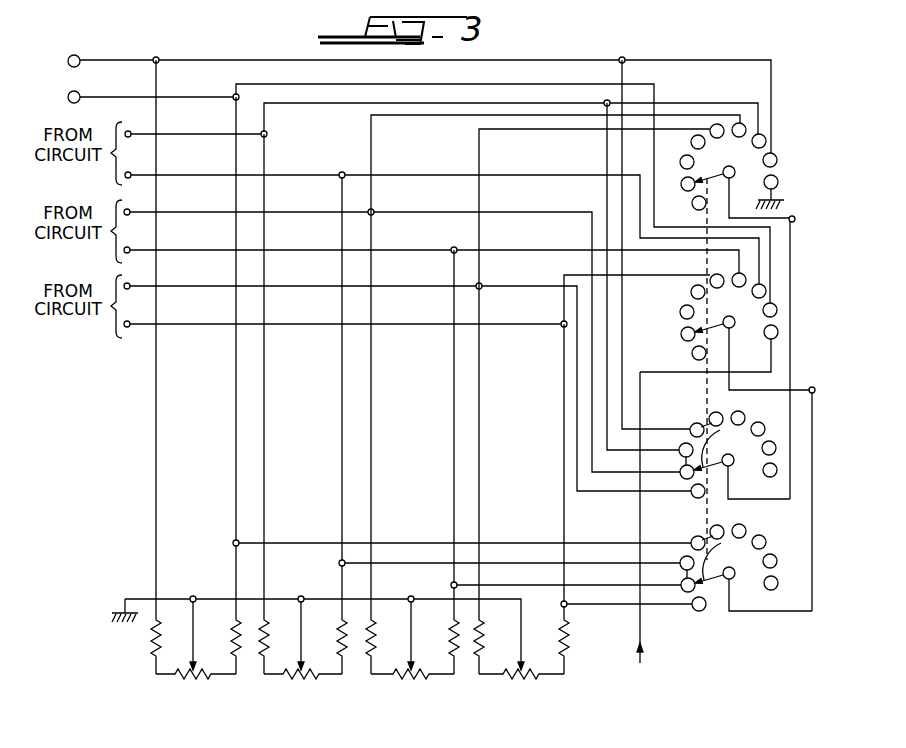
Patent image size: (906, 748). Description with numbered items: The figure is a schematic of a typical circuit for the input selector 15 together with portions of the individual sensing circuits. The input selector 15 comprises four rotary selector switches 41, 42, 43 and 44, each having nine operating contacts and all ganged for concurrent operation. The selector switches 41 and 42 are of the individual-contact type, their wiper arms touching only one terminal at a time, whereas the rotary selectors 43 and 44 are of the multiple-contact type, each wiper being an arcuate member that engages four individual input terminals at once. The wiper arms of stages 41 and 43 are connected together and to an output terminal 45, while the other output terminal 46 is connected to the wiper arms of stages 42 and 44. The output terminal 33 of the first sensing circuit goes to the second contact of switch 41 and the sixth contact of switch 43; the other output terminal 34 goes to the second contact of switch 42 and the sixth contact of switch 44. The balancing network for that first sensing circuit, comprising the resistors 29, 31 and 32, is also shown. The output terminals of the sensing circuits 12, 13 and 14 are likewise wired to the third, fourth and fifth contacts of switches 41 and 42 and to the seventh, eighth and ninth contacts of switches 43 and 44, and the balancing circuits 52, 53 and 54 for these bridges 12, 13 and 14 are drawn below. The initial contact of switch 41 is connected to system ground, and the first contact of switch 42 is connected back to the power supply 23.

The sensing circuit 12 is at (413, 192).
The sensing circuit 13 is at (403, 336).
The sensing circuit 14 is at (388, 383).
The input selector 15 is at (786, 52).
The power supply 23 is at (651, 550).
The resistor 29 is at (151, 641).
The resistor 31 is at (204, 677).
The resistor 32 is at (240, 655).
The output terminal 33 is at (69, 56).
The output terminal 34 is at (69, 93).
The rotary selector switch 41 is at (803, 138).
The rotary selector switch 42 is at (782, 313).
The rotary selector switch 43 is at (759, 484).
The rotary selector switch 44 is at (747, 593).
The output terminal 45 is at (794, 216).
The output terminal 46 is at (812, 386).
The balancing circuit 52 is at (336, 666).
The balancing circuit 53 is at (441, 667).
The balancing circuit 54 is at (542, 664).